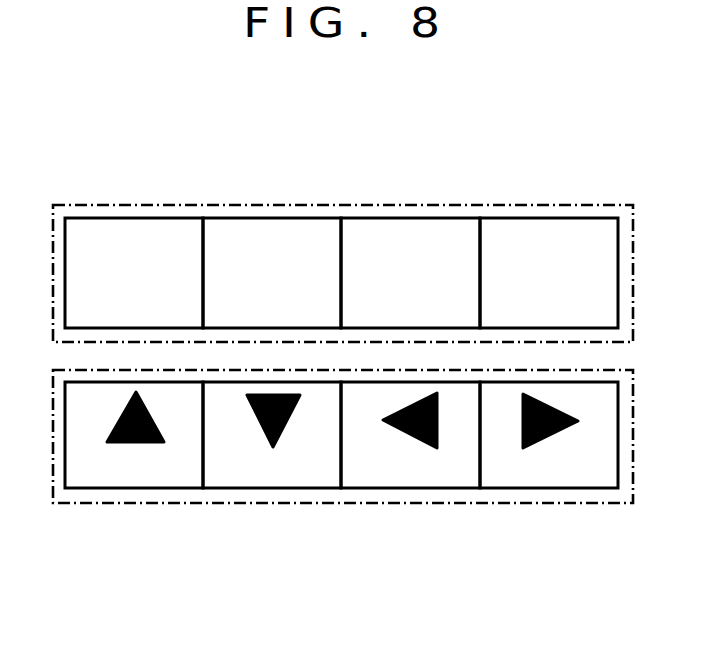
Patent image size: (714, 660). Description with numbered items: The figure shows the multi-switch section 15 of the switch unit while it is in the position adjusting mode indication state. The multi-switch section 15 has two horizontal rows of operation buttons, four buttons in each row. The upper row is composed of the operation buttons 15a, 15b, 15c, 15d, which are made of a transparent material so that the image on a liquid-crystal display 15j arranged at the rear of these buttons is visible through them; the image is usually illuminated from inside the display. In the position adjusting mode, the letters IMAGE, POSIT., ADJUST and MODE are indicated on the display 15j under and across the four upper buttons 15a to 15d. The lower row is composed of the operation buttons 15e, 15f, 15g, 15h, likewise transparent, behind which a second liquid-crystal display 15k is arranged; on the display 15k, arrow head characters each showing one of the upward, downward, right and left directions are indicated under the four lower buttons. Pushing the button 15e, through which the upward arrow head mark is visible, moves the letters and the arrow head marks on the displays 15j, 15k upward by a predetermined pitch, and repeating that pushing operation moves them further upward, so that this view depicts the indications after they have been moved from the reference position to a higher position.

The multi-switch section 15 is at (316, 155).
The operation button 15a is at (182, 225).
The operation button 15b is at (318, 225).
The operation button 15c is at (357, 222).
The operation button 15d is at (498, 235).
The operation button 15e is at (157, 482).
The operation button 15f is at (313, 480).
The operation button 15g is at (370, 480).
The operation button 15h is at (490, 480).
The liquid-crystal display 15j is at (337, 208).
The liquid-crystal display 15k is at (337, 503).